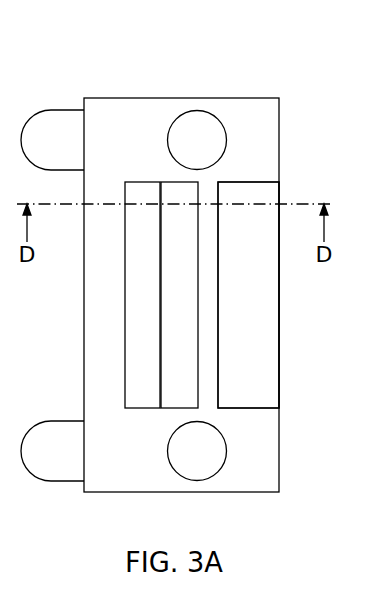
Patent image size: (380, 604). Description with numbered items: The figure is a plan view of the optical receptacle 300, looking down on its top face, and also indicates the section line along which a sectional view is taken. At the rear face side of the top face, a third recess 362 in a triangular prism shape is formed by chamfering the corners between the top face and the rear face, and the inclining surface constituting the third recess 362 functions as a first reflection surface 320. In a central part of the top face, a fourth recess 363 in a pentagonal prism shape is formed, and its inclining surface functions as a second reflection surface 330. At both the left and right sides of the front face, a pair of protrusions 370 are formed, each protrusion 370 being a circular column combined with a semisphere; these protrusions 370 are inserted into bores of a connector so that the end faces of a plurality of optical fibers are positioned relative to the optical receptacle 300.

The optical receptacle 300 is at (278, 71).
The protrusion 370 is at (54, 119).
The fourth recess 363 is at (142, 321).
The second reflection surface 330 is at (178, 383).
The third recess 362 is at (262, 325).
The first reflection surface 320 is at (255, 377).